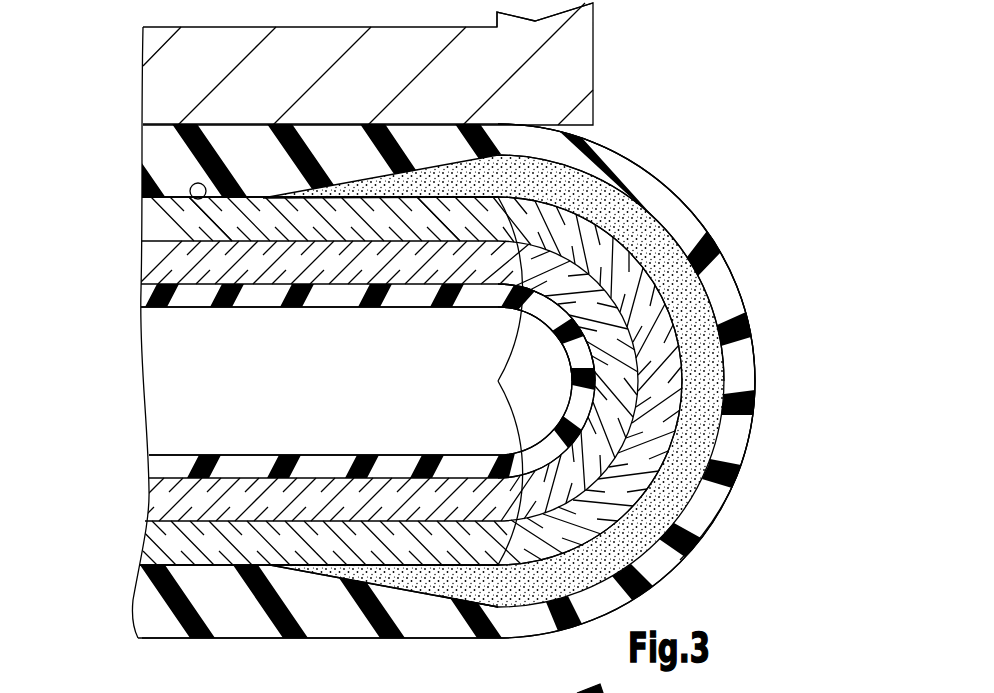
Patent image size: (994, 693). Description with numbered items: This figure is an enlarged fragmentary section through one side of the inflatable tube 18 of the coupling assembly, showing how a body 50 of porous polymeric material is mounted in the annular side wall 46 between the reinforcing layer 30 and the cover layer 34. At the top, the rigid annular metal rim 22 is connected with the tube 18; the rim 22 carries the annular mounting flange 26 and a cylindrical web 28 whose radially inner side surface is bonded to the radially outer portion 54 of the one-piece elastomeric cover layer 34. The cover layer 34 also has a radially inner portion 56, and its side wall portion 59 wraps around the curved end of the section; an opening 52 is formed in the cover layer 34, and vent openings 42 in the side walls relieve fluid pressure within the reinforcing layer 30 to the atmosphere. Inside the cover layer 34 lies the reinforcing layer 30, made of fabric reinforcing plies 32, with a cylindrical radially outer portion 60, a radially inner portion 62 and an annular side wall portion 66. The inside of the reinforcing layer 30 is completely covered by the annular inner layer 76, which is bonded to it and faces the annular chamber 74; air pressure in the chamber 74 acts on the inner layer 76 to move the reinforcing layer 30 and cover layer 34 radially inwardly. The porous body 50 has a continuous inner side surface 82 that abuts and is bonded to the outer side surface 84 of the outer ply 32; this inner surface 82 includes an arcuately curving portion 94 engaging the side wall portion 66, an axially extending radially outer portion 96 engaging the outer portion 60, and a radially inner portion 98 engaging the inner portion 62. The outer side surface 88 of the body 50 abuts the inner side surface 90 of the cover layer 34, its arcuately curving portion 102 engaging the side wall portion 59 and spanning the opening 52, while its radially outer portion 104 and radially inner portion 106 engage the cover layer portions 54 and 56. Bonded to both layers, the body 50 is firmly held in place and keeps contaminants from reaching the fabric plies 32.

The inflatable tube 18 is at (727, 532).
The rigid annular metal rim 22 is at (618, 67).
The annular mounting flange 26 is at (588, 16).
The cylindrical web 28 is at (167, 82).
The reinforcing layer 30 is at (333, 289).
The reinforcing plies 32 is at (142, 262).
The cover layer 34 is at (600, 133).
The vent openings 42 is at (770, 286).
The annular side wall 46 is at (754, 438).
The body of porous polymeric material 50 is at (724, 324).
The opening in the cover layer 52 is at (742, 342).
The radially outer portion of the cover layer 54 is at (170, 162).
The radially inner portion of the cover layer 56 is at (153, 604).
The side wall portion of the cover layer 59 is at (733, 458).
The radially outer portion of the reinforcing layer 60 is at (203, 199).
The radially inner portion of the reinforcing layer 62 is at (313, 478).
The side wall portion of the reinforcing layer 66 is at (628, 402).
The annular chamber 74 is at (265, 384).
The annular inner layer 76 is at (236, 468).
The inner side surface of the porous body 82 is at (575, 318).
The outer side surface of the outer ply 84 is at (196, 205).
The outer side surface of the porous body 88 is at (703, 255).
The inner side surface of the cover layer 90 is at (610, 156).
The arcuately curving portion of the inner side surface 94 is at (628, 362).
The radially outer portion of the inner side surface 96 is at (424, 200).
The radially inner portion of the inner side surface 98 is at (403, 568).
The arcuately curving portion of the outer side surface 102 is at (713, 292).
The radially outer portion of the outer side surface 104 is at (436, 168).
The radially inner portion of the outer side surface 106 is at (433, 598).